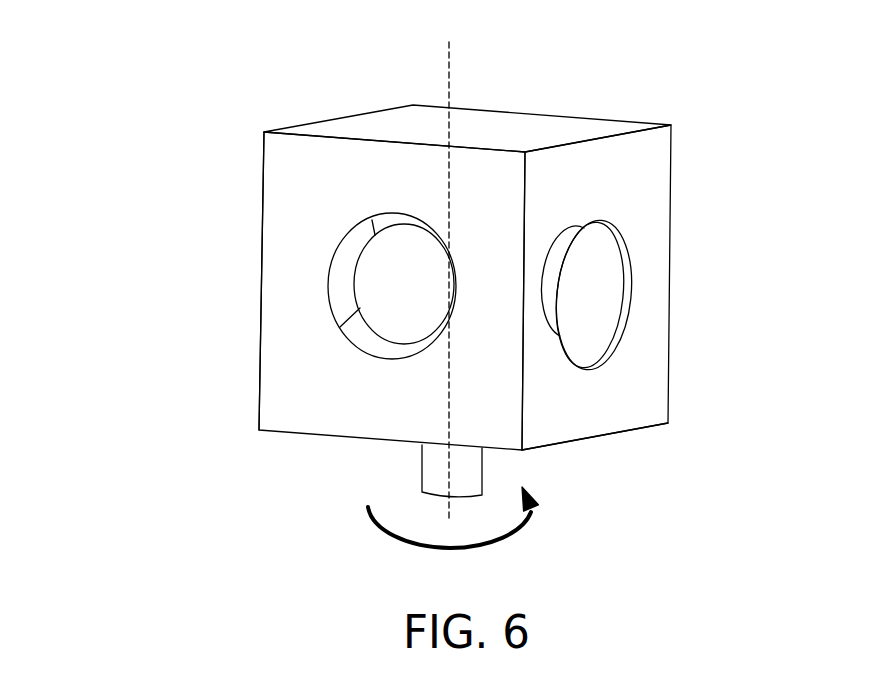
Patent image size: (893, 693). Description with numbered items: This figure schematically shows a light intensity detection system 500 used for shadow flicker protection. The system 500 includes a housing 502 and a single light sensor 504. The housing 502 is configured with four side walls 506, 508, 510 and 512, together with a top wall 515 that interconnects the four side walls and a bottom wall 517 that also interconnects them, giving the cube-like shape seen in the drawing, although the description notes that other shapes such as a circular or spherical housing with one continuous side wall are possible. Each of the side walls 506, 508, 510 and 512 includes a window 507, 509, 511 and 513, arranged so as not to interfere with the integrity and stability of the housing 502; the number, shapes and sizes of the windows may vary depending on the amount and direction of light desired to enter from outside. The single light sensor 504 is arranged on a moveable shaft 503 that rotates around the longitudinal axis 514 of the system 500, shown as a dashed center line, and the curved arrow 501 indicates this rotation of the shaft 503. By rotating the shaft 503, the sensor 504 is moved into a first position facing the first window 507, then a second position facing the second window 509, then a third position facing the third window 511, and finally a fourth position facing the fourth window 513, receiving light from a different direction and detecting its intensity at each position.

The light intensity detection system 500 is at (160, 58).
The rotation direction 501 is at (524, 536).
The housing 502 is at (346, 194).
The moveable shaft 503 is at (421, 473).
The single light sensor 504 is at (441, 296).
The side wall 506 is at (273, 395).
The first window 507 is at (332, 305).
The side wall 508 is at (322, 98).
The second window 509 is at (343, 253).
The side wall 510 is at (620, 106).
The third window 511 is at (592, 260).
The side wall 512 is at (663, 166).
The fourth window 513 is at (607, 355).
The longitudinal axis 514 is at (449, 58).
The top wall 515 is at (512, 123).
The bottom wall 517 is at (575, 465).